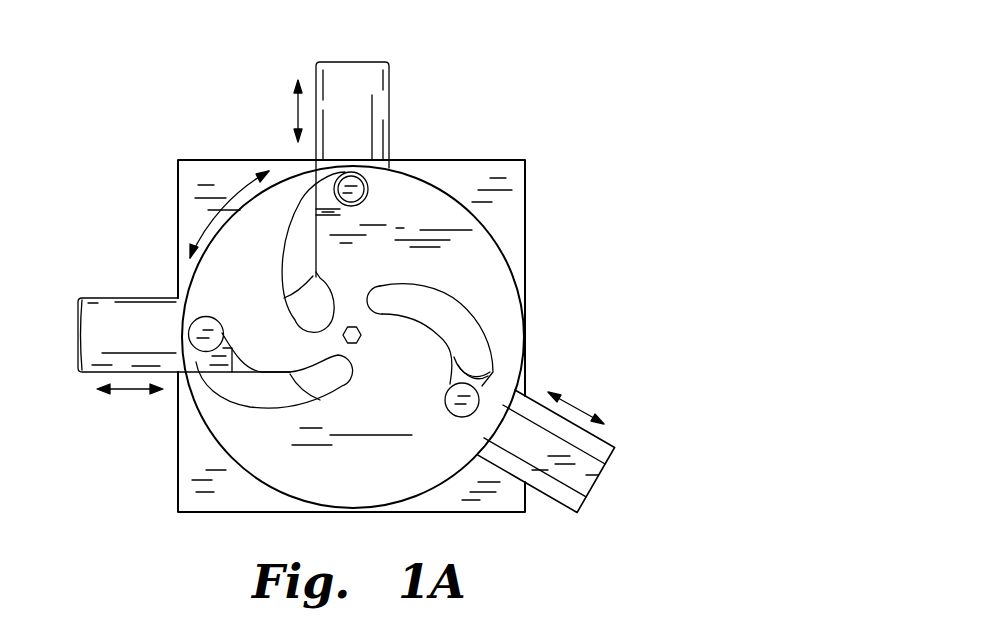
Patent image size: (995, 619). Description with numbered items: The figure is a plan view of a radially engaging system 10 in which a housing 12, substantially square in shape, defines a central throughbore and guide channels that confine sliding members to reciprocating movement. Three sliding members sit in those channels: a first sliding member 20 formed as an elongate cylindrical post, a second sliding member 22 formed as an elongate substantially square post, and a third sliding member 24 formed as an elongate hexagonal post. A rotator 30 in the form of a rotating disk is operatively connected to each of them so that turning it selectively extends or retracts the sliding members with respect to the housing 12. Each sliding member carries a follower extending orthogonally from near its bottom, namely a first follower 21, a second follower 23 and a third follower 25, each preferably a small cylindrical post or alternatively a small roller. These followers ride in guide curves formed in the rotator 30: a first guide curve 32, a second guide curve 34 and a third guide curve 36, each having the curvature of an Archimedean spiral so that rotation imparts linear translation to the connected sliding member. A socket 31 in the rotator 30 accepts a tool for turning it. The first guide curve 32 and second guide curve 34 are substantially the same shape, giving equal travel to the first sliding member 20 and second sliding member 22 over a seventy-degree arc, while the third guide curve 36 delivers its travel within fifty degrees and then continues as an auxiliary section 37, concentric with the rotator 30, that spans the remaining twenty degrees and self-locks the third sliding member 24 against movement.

The radially engaging system 10 is at (614, 136).
The housing 12 is at (513, 225).
The first sliding member 20 is at (389, 83).
The first follower 21 is at (368, 189).
The second sliding member 22 is at (115, 298).
The second follower 23 is at (205, 345).
The third sliding member 24 is at (588, 472).
The third follower 25 is at (465, 414).
The rotator 30 is at (230, 420).
The socket 31 is at (347, 300).
The first guide curve 32 is at (292, 180).
The second guide curve 34 is at (245, 450).
The third guide curve 36 is at (497, 292).
The auxiliary section 37 is at (488, 378).